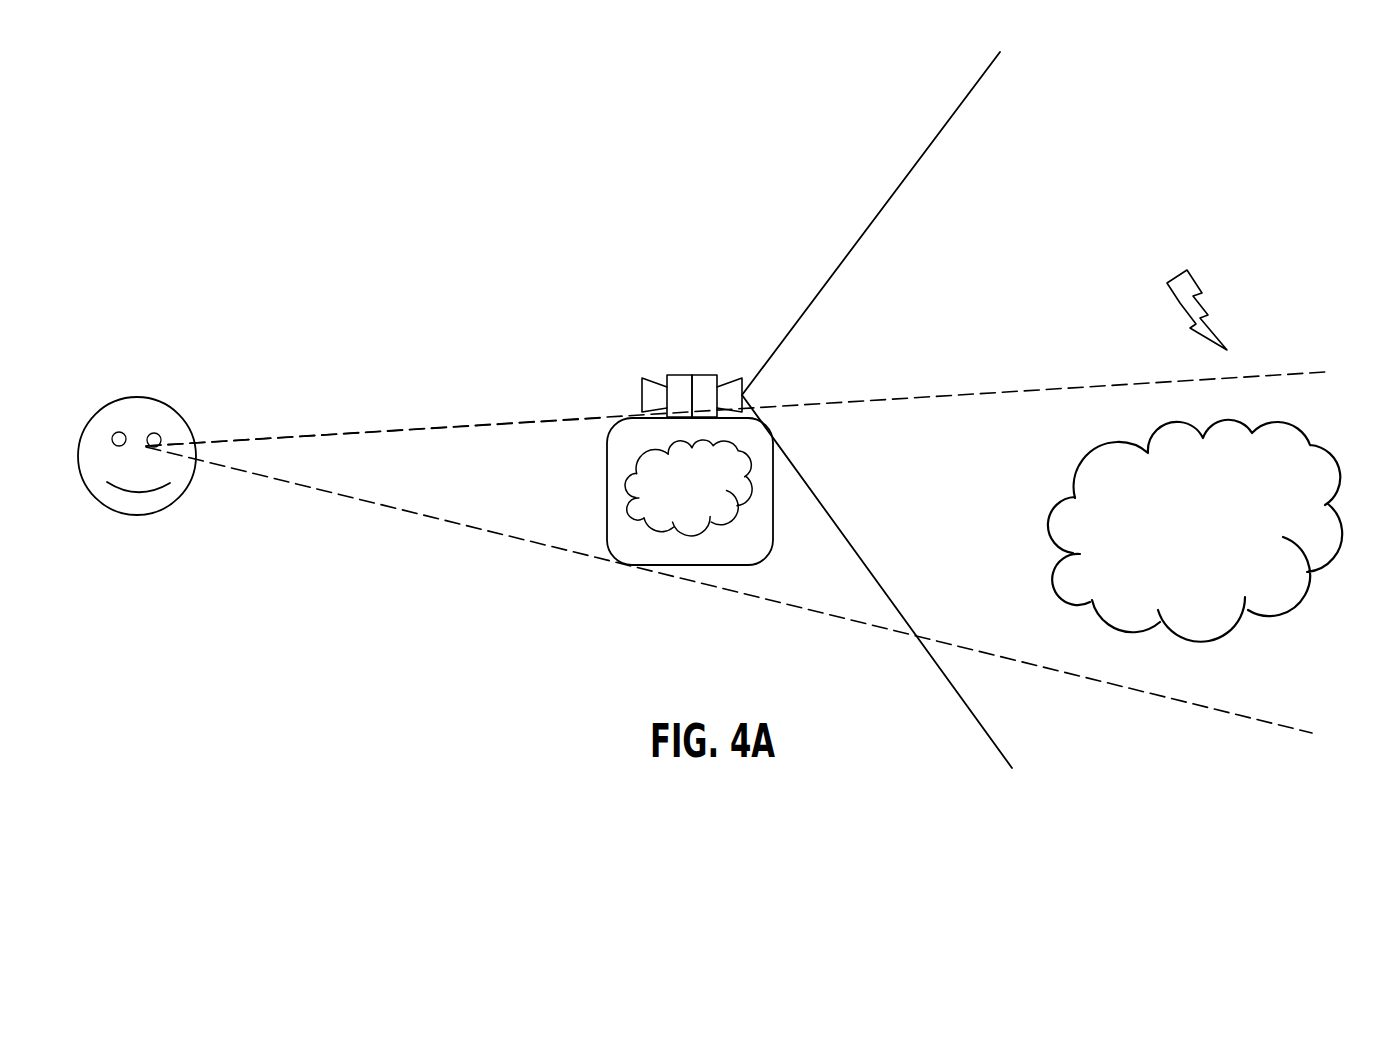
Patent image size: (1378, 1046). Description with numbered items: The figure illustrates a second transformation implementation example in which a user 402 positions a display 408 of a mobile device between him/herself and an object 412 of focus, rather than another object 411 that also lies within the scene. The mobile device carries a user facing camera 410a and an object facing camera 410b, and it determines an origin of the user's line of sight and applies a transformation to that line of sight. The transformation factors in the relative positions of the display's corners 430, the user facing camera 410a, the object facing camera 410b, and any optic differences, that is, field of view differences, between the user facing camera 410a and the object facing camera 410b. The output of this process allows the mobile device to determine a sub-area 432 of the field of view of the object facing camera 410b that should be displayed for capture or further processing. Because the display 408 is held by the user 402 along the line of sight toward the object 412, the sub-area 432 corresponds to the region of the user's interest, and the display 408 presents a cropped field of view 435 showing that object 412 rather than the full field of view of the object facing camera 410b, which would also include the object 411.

The user 402 is at (113, 513).
The display 408 is at (663, 555).
The user facing camera 410a is at (678, 382).
The object facing camera 410b is at (708, 382).
The object 411 is at (1203, 300).
The object of focus 412 is at (1213, 536).
The display's corners 430 is at (580, 413).
The sub-area 432 is at (896, 512).
The cropped field of view 435 is at (740, 537).